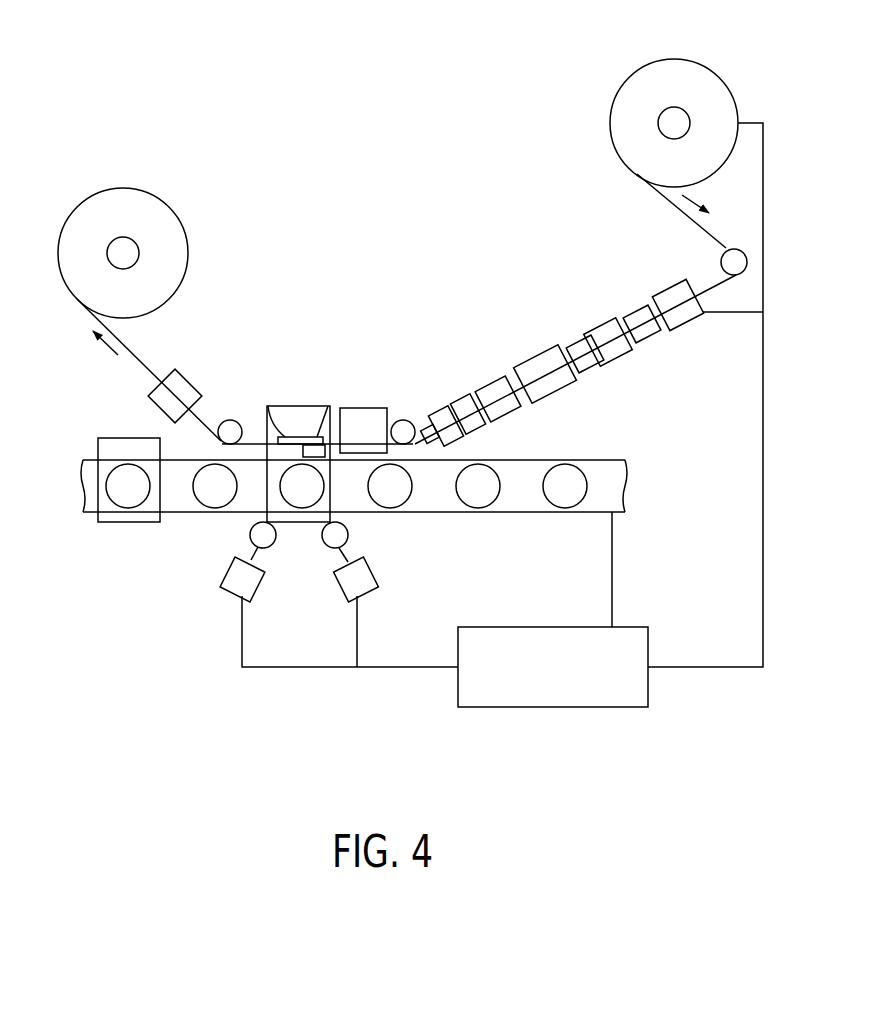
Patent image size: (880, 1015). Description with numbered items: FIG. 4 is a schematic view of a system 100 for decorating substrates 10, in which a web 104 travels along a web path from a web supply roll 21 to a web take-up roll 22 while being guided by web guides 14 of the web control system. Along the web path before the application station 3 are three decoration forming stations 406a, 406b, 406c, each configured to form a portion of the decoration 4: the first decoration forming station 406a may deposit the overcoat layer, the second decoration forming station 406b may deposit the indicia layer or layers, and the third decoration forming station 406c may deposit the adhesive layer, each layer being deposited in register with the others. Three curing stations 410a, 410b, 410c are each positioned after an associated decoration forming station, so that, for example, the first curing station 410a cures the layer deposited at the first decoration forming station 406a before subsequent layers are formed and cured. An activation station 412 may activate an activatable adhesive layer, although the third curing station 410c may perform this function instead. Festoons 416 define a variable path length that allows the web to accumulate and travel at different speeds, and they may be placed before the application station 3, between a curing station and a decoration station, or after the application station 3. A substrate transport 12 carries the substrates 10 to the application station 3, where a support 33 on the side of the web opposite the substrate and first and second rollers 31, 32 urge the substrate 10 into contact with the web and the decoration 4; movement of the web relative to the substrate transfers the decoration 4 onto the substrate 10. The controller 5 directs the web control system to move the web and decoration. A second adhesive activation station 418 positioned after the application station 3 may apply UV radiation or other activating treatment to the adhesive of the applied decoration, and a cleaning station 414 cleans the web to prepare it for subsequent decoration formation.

The system 100 is at (148, 101).
The web supply roll 21 is at (616, 98).
The web take-up roll 22 is at (187, 262).
The web 104 is at (130, 365).
The web guide 14 is at (227, 419).
The cleaning station 414 is at (186, 378).
The application station 3 is at (303, 416).
The support 33 is at (283, 437).
The decoration 4 is at (315, 448).
The festoon 416 is at (363, 408).
The activation station 412 is at (440, 408).
The first curing station 410a is at (638, 305).
The second curing station 410b is at (575, 335).
The third curing station 410c is at (467, 387).
The first decoration forming station 406a is at (690, 330).
The second decoration forming station 406b is at (604, 320).
The third decoration forming station 406c is at (490, 373).
The substrate transport 12 is at (452, 513).
The substrate 10 is at (560, 500).
The second adhesive activation station 418 is at (150, 524).
The first roller 31 is at (271, 547).
The second roller 32 is at (348, 538).
The controller 5 is at (560, 680).